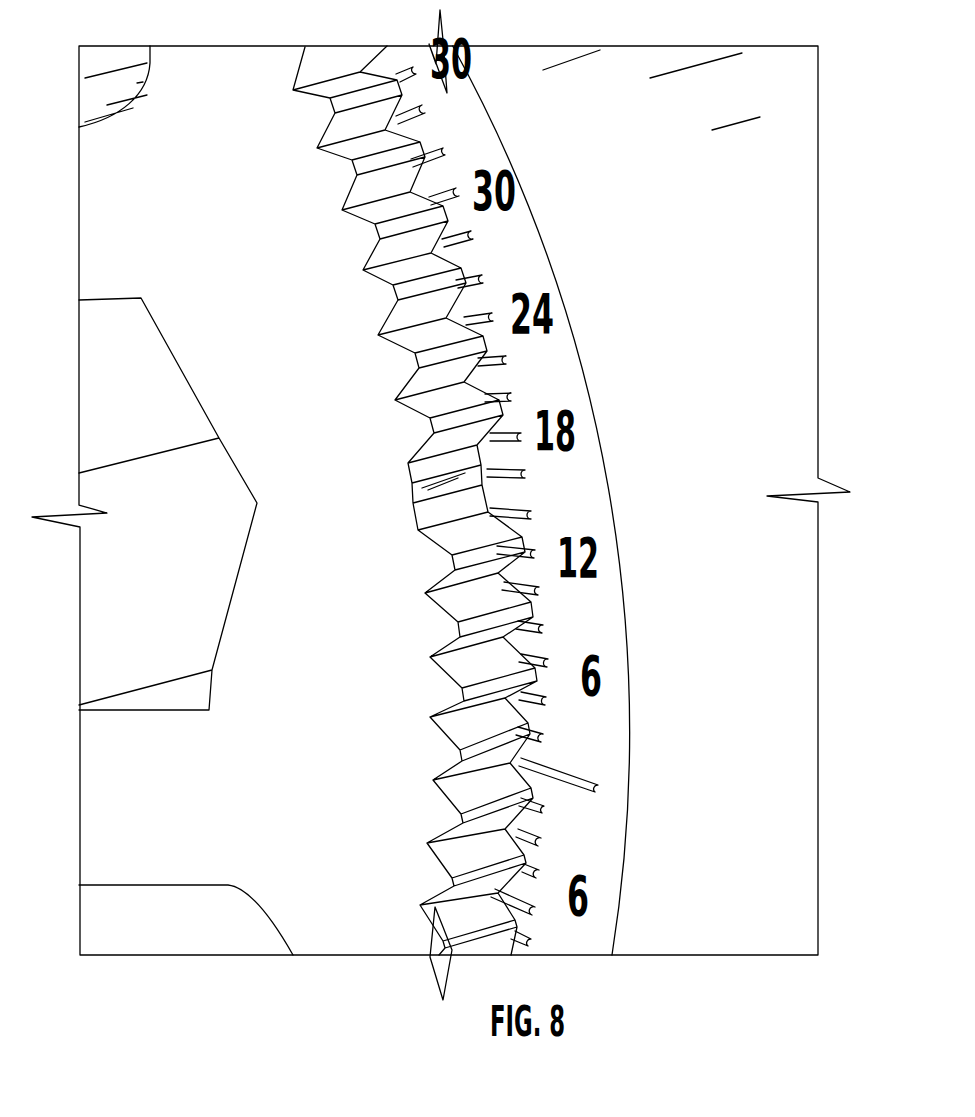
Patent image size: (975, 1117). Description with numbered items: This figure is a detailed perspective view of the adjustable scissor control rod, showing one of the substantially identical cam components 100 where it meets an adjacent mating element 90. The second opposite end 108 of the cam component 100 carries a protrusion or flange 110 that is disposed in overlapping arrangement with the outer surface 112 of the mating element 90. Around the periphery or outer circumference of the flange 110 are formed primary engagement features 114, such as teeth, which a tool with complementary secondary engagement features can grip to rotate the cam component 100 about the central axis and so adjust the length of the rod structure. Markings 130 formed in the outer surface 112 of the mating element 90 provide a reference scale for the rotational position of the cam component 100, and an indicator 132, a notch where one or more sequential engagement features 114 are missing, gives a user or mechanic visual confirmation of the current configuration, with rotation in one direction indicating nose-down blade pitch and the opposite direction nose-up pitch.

The cam component 100 is at (128, 787).
The second opposite end 108 is at (120, 235).
The protrusion or flange 110 is at (330, 290).
The markings 130 is at (495, 401).
The primary engagement features 114 is at (520, 747).
The indicator 132 is at (457, 488).
The outer surface 112 is at (588, 827).
The mating element 90 is at (735, 422).